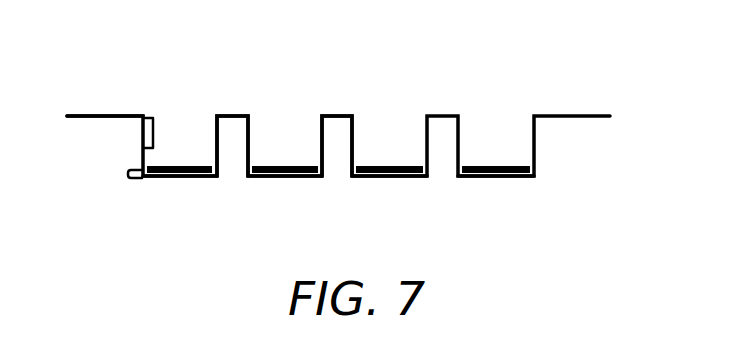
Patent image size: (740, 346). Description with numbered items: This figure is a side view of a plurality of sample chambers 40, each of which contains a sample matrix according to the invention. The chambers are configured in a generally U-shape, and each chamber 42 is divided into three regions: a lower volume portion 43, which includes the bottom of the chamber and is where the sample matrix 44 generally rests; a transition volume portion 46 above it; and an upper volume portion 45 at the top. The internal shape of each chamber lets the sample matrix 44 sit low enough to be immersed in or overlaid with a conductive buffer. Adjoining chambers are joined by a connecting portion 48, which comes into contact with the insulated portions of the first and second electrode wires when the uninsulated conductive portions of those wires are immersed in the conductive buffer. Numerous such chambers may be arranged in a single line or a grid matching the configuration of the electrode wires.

The sample chambers 40 is at (516, 50).
The chamber 42 is at (185, 177).
The lower volume portion 43 is at (129, 176).
The sample matrix 44 is at (173, 166).
The upper volume portion 45 is at (156, 127).
The transition volume portion 46 is at (143, 153).
The connecting portion 48 is at (231, 114).